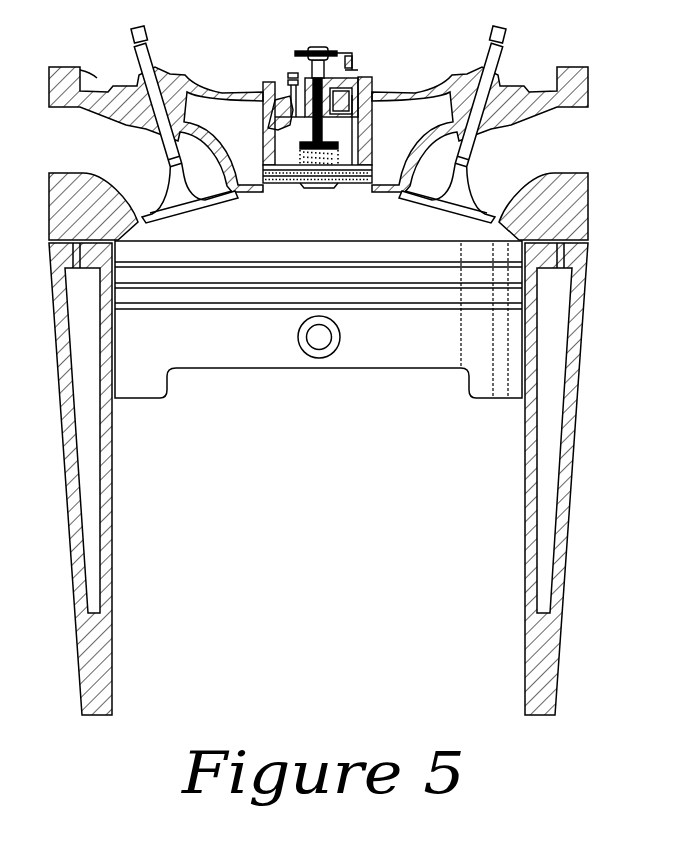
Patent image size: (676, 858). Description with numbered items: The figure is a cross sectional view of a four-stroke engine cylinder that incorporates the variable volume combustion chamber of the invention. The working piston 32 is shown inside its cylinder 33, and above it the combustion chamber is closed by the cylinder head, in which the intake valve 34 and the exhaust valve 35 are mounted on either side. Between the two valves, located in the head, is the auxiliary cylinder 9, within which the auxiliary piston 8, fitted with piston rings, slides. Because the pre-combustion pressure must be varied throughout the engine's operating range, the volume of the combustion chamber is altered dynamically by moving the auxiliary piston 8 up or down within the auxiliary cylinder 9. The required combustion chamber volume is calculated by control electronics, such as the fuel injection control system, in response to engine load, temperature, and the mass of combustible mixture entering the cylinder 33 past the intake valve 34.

The auxiliary piston 8 is at (335, 178).
The auxiliary cylinder 9 is at (377, 133).
The working piston 32 is at (268, 368).
The cylinder 33 is at (528, 468).
The intake valve 34 is at (184, 131).
The exhaust valve 35 is at (452, 130).